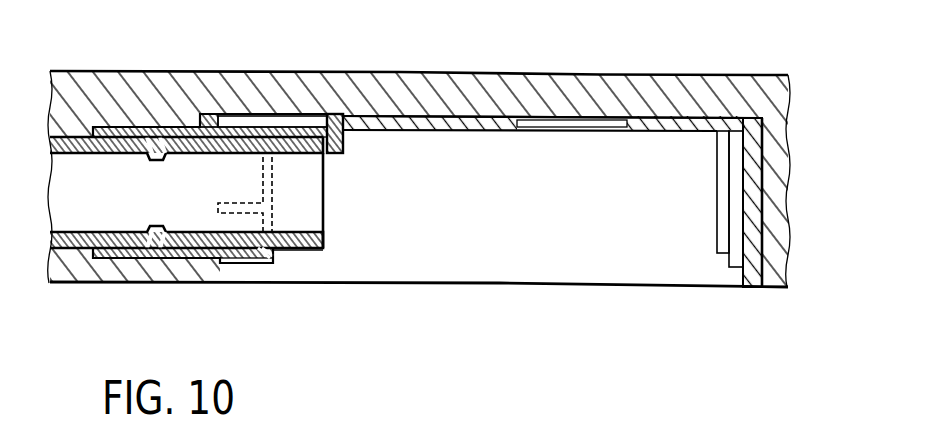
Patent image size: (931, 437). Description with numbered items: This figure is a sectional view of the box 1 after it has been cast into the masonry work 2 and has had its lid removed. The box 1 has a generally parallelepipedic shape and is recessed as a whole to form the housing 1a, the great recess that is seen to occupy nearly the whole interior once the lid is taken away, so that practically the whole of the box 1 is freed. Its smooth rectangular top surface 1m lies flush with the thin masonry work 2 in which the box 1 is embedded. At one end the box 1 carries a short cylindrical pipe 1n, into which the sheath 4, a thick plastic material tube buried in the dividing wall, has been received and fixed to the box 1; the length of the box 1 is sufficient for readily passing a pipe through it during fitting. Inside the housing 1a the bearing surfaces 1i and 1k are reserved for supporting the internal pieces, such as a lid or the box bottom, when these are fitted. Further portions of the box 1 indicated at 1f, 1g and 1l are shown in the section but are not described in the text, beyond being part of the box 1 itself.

The box 1 is at (386, 116).
The housing 1a is at (501, 254).
The groove 1f is at (533, 118).
The land portion 1g is at (624, 122).
The bearing surface 1i is at (297, 250).
The bearing surface 1k is at (718, 255).
The end wall 1l is at (734, 268).
The top surface 1m is at (205, 283).
The short cylindrical pipe 1n is at (118, 258).
The masonry work 2 is at (176, 71).
The sheath 4 is at (75, 243).